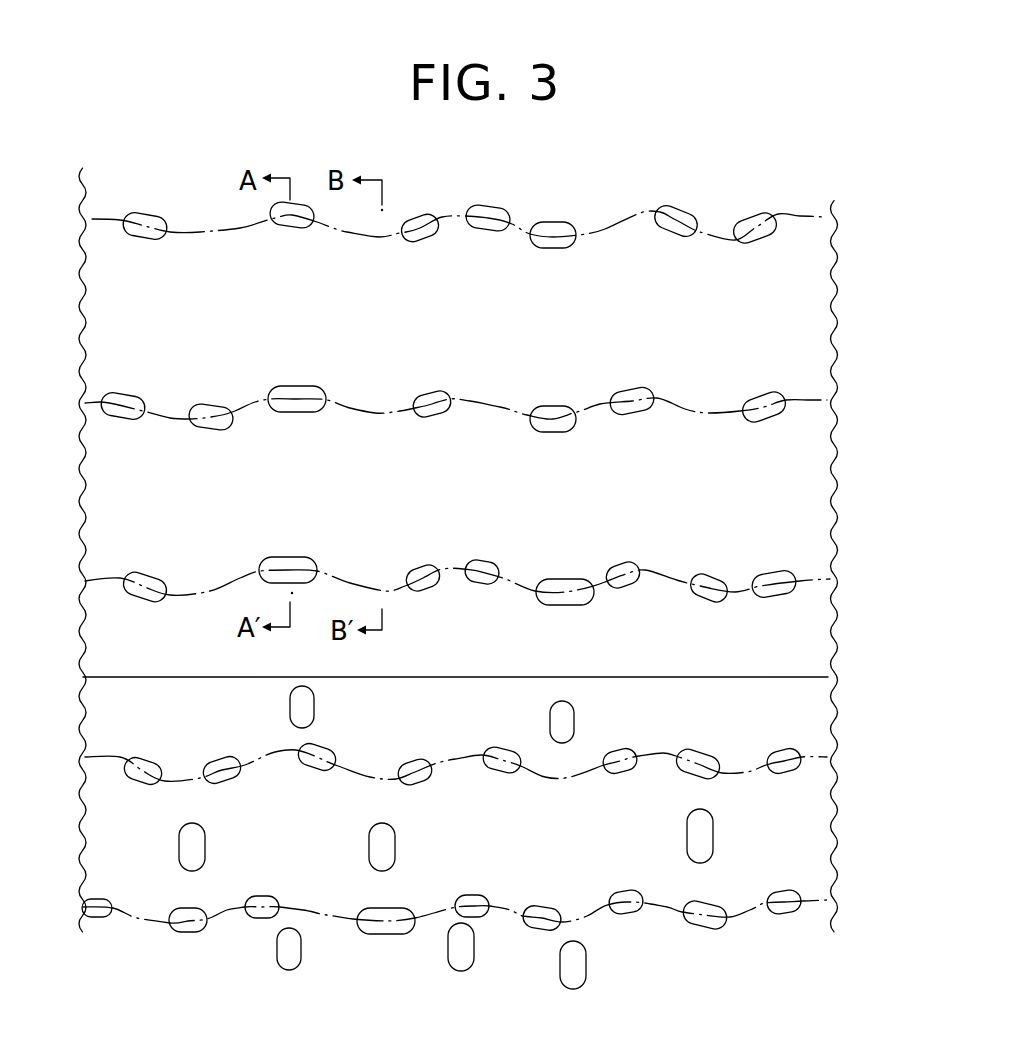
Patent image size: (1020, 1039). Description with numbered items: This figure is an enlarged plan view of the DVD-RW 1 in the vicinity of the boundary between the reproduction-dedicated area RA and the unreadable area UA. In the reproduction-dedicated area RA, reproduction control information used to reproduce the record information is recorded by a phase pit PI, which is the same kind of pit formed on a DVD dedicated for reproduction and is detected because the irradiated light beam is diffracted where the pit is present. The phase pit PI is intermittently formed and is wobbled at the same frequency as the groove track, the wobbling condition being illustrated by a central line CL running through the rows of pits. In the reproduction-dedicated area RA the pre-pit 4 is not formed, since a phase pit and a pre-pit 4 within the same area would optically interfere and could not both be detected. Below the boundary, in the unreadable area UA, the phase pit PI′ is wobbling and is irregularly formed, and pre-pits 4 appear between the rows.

The DVD-RW 1 is at (778, 209).
The pre-pit 4 is at (446, 839).
The phase pit PI is at (167, 240).
The phase pit PI′ is at (210, 758).
The central line CL is at (815, 398).
The reproduction-dedicated area RA is at (827, 605).
The unreadable area UA is at (828, 825).